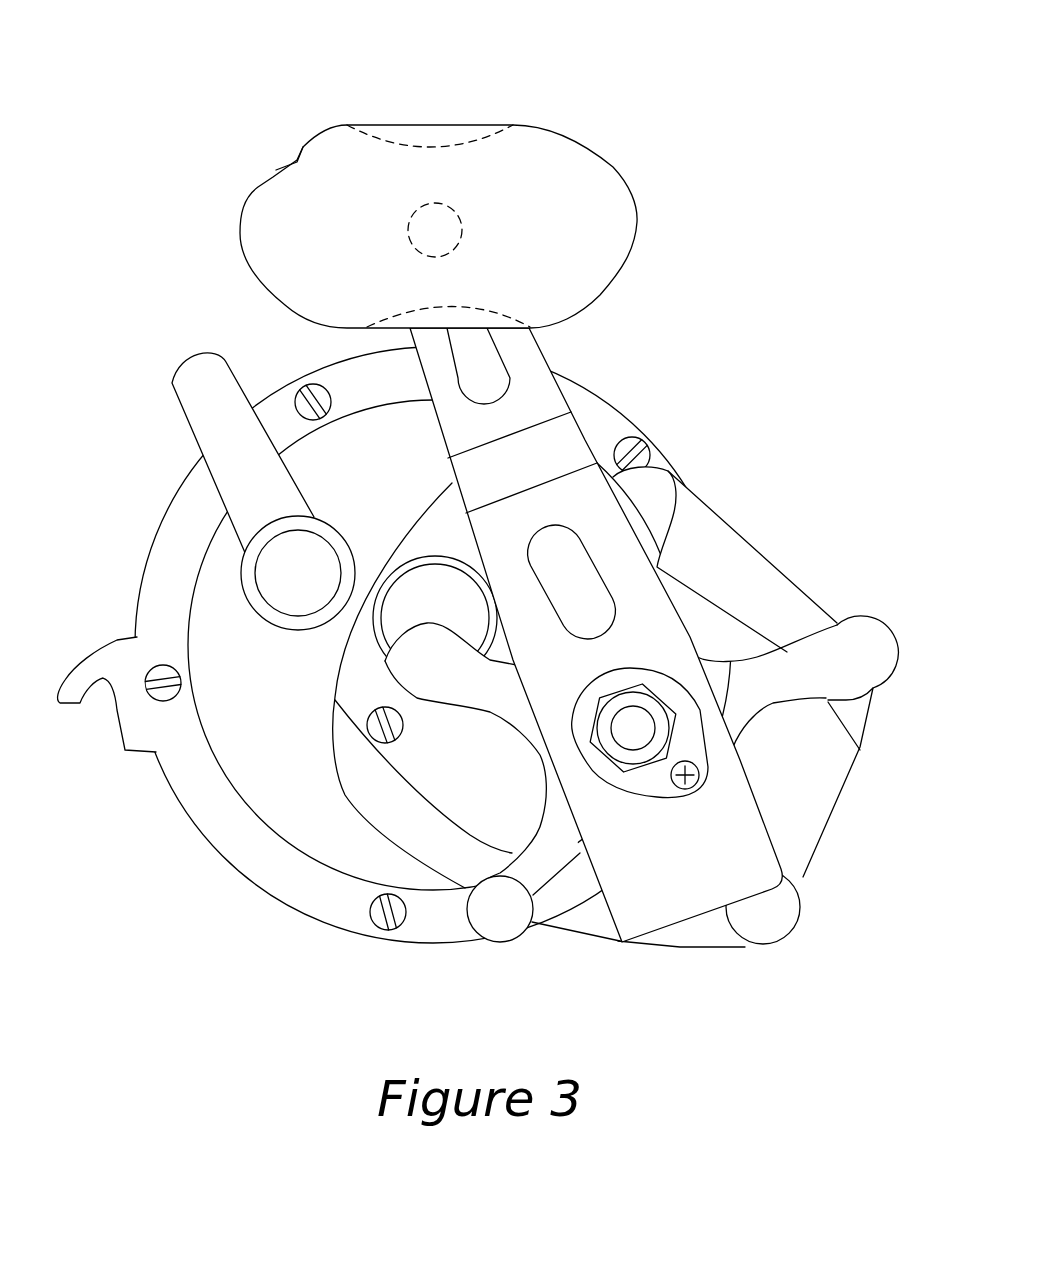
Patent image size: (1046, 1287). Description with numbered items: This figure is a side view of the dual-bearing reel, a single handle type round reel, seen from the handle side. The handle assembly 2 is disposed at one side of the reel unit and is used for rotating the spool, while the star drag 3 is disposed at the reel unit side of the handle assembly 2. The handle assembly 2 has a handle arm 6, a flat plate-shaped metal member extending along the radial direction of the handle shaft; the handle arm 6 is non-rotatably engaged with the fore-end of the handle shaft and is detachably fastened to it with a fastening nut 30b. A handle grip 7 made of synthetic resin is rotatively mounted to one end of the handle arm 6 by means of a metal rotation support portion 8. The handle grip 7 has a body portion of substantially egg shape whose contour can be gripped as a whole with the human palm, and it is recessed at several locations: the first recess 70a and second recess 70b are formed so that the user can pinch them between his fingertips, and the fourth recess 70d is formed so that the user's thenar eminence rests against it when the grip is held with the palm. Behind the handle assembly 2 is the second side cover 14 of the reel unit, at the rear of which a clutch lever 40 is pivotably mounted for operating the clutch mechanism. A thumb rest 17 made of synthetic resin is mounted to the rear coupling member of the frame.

The handle assembly 2 is at (593, 442).
The star drag 3 is at (657, 497).
The handle arm 6 is at (537, 408).
The handle grip 7 is at (597, 153).
The rotation support portion 8 is at (462, 235).
The second side cover 14 is at (603, 422).
The thumb rest 17 is at (137, 738).
The fastening nut 30b is at (652, 705).
The clutch lever 40 is at (195, 400).
The first recess 70a is at (433, 147).
The second recess 70b is at (390, 328).
The fourth recess 70d is at (279, 170).